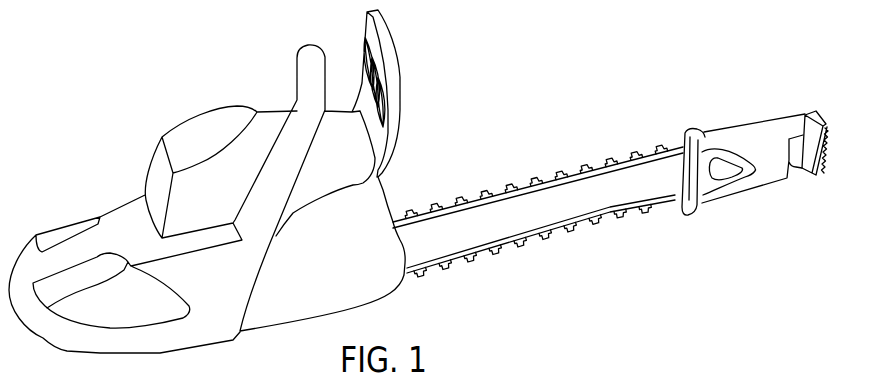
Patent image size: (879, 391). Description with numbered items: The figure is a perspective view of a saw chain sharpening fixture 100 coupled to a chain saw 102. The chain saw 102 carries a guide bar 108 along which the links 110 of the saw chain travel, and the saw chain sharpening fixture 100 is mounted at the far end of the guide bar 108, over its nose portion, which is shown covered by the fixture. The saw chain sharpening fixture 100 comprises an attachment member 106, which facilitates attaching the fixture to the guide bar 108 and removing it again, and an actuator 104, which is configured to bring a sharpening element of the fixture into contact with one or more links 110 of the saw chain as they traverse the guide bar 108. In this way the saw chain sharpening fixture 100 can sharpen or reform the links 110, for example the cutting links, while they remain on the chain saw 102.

The saw chain sharpening fixture 100 is at (753, 110).
The chain saw 102 is at (218, 62).
The actuator 104 is at (825, 124).
The attachment member 106 is at (723, 173).
The guide bar 108 is at (527, 207).
The links 110 is at (607, 165).